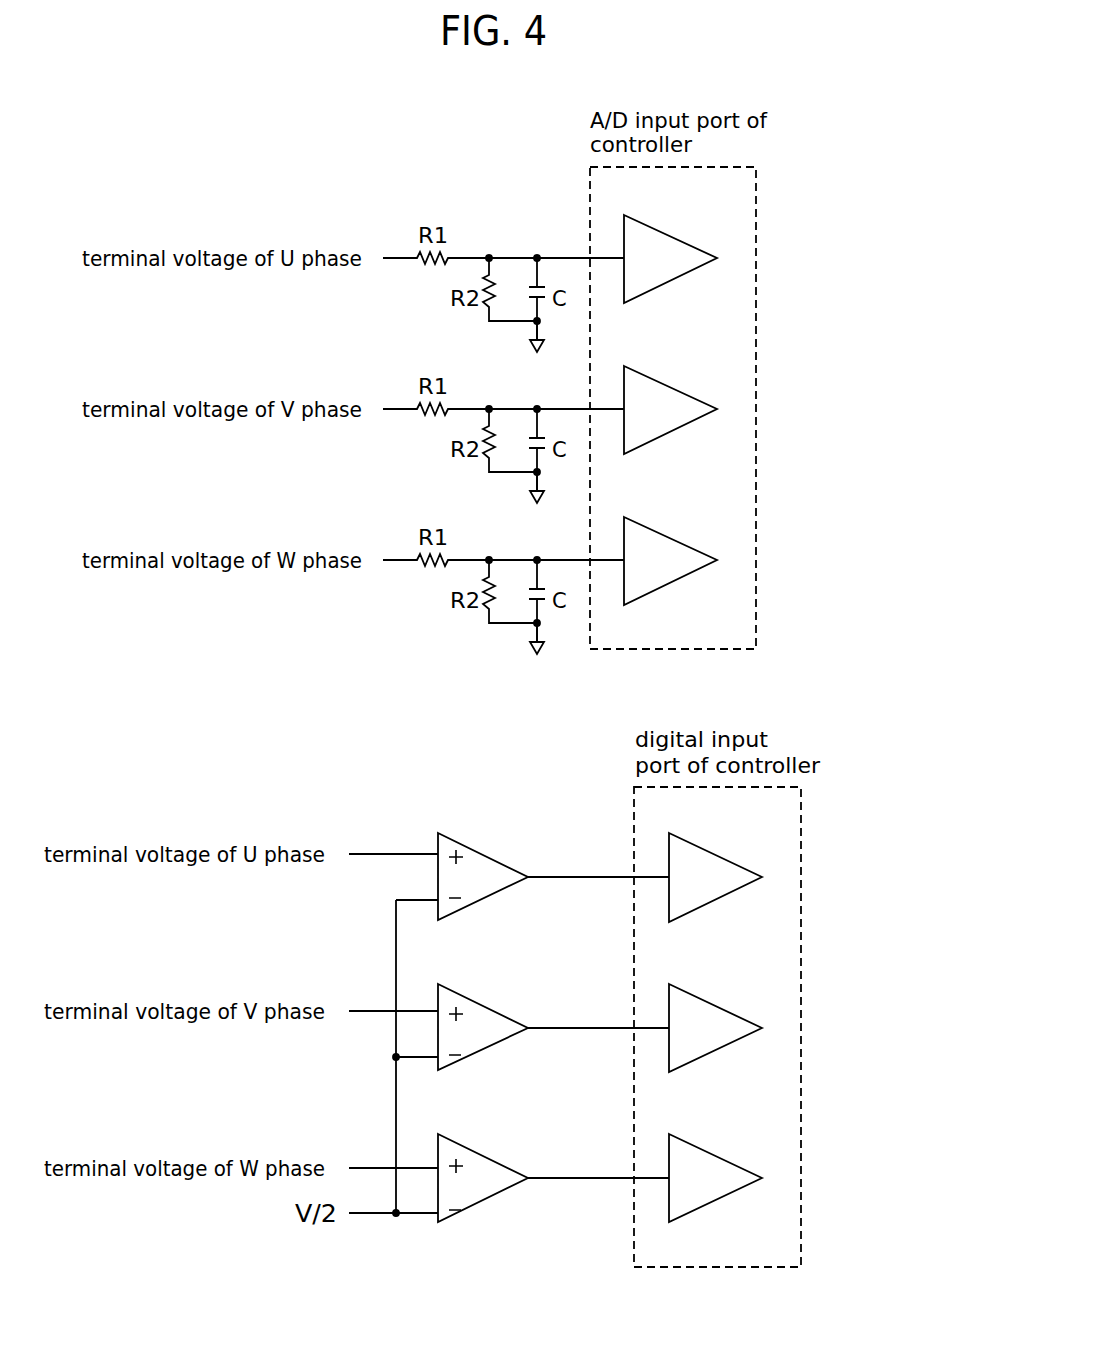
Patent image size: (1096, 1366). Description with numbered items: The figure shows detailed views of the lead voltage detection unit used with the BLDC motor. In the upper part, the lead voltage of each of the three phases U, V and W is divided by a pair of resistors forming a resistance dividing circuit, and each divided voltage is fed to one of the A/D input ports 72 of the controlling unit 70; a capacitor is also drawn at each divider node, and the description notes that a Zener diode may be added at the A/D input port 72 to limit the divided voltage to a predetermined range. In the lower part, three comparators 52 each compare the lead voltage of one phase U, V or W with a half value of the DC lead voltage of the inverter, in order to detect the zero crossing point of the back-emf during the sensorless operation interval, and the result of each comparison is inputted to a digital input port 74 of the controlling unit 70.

The comparator 52 is at (460, 843).
The controlling unit 70 is at (756, 407).
The A/D input port 72 is at (668, 236).
The digital input port 74 is at (716, 854).